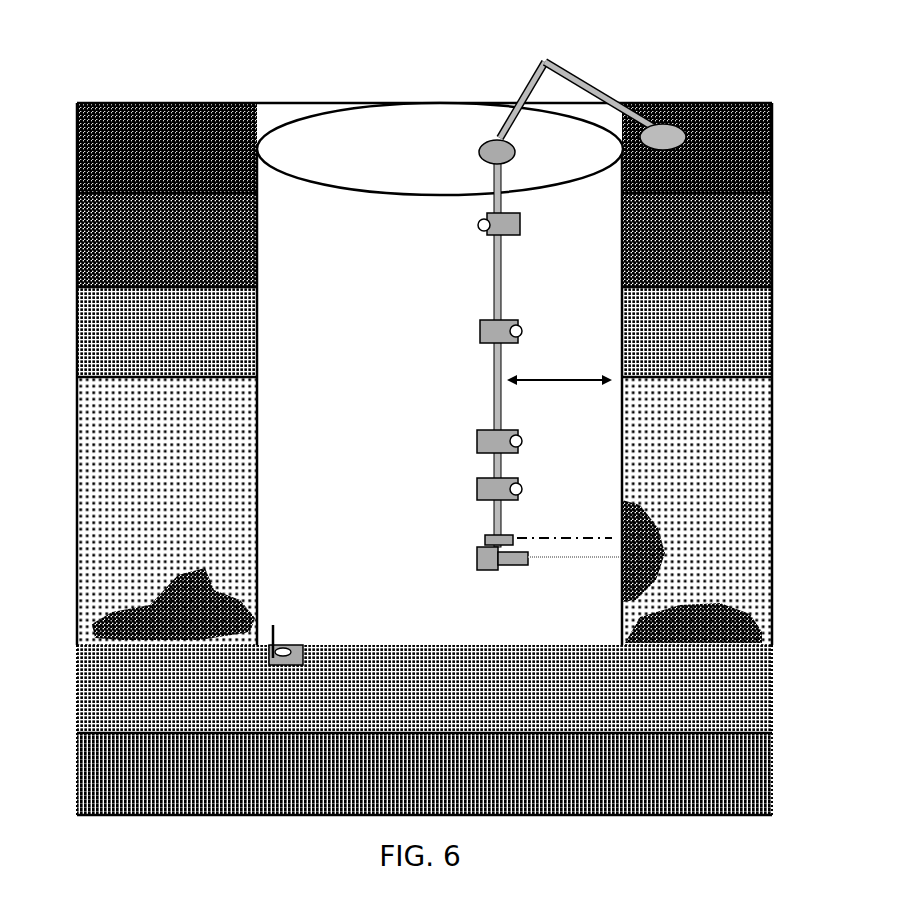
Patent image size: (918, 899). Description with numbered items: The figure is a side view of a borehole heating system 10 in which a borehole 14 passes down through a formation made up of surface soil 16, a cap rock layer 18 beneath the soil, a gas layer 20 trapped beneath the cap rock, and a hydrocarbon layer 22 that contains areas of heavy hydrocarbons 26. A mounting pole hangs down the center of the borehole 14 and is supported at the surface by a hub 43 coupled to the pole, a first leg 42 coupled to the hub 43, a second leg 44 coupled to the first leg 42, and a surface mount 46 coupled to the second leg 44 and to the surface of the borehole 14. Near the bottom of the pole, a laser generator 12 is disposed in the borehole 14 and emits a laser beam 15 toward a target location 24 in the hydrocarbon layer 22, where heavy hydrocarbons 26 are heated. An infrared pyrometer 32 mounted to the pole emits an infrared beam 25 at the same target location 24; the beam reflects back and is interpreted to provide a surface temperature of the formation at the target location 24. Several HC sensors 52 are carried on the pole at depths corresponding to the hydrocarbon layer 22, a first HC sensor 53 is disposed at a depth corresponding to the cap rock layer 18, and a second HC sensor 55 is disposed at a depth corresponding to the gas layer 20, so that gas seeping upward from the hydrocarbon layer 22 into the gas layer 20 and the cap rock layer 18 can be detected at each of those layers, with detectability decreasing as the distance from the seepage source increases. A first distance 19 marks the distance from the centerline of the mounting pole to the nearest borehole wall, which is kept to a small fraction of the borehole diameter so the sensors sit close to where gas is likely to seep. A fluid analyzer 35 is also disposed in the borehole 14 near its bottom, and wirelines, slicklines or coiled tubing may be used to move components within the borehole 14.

The borehole heating system 10 is at (197, 86).
The laser generator 12 is at (477, 558).
The borehole 14 is at (288, 329).
The laser beam 15 is at (580, 562).
The surface soil 16 is at (757, 163).
The cap rock layer 18 is at (757, 245).
The first distance 19 is at (567, 380).
The gas layer 20 is at (757, 330).
The hydrocarbon layer 22 is at (757, 435).
The target location 24 is at (655, 522).
The infrared beam 25 is at (583, 537).
The heavy hydrocarbons 26 is at (757, 622).
The infrared pyrometer 32 is at (487, 535).
The fluid analyzer 35 is at (305, 658).
The first leg 42 is at (525, 87).
The hub 43 is at (500, 152).
The second leg 44 is at (587, 83).
The surface mount 46 is at (682, 128).
The HC sensors 52 is at (477, 441).
The first HC sensor 53 is at (490, 333).
The second HC sensor 55 is at (510, 222).